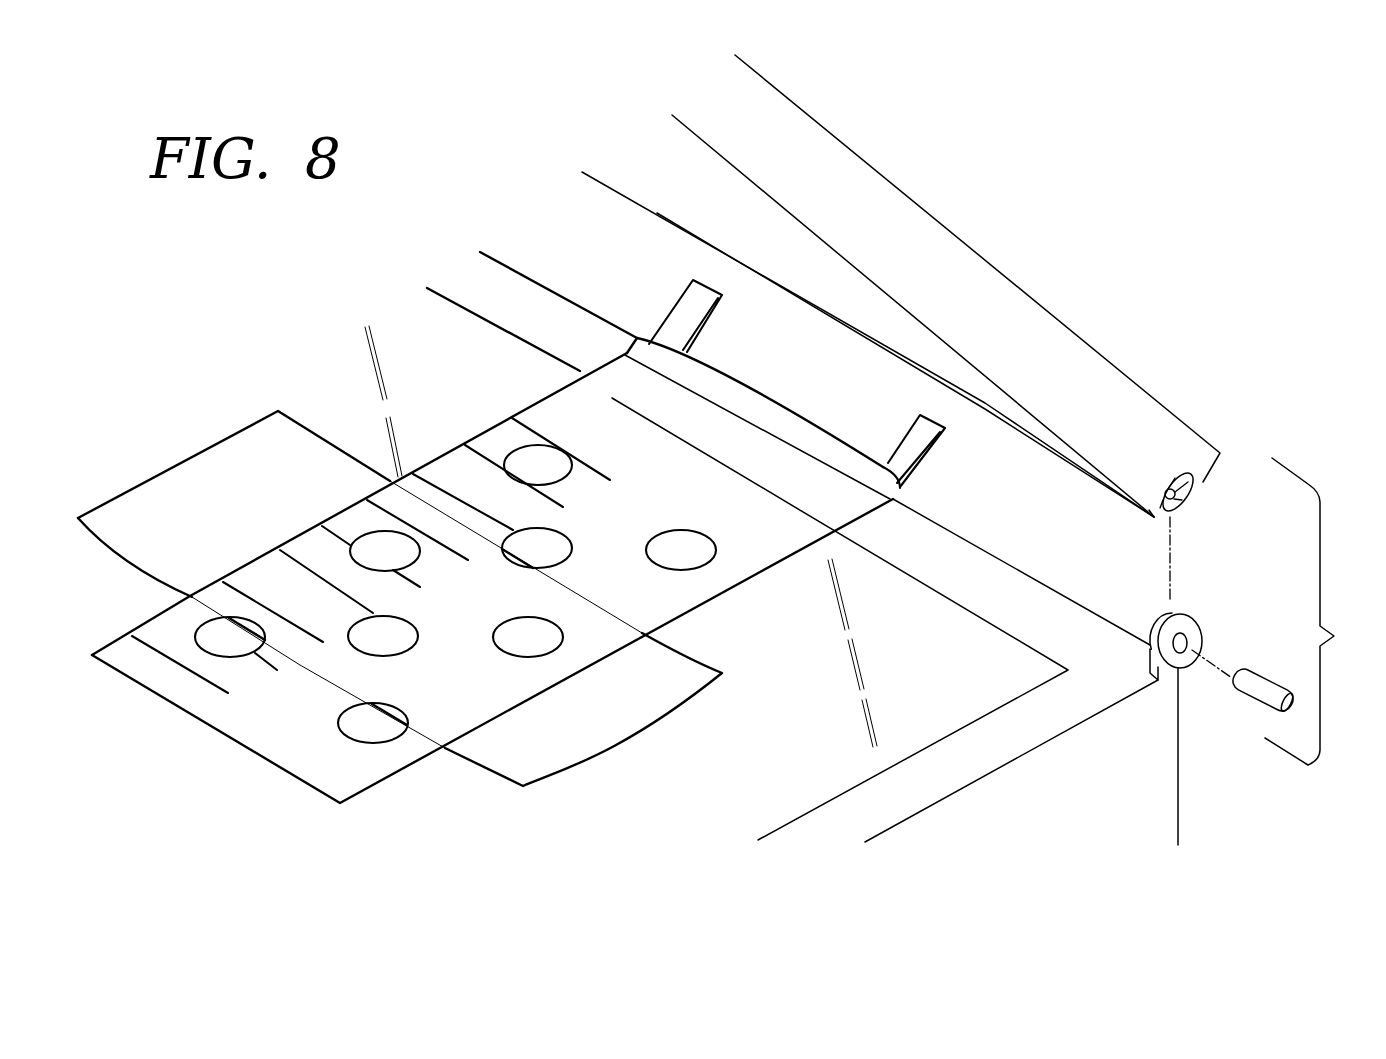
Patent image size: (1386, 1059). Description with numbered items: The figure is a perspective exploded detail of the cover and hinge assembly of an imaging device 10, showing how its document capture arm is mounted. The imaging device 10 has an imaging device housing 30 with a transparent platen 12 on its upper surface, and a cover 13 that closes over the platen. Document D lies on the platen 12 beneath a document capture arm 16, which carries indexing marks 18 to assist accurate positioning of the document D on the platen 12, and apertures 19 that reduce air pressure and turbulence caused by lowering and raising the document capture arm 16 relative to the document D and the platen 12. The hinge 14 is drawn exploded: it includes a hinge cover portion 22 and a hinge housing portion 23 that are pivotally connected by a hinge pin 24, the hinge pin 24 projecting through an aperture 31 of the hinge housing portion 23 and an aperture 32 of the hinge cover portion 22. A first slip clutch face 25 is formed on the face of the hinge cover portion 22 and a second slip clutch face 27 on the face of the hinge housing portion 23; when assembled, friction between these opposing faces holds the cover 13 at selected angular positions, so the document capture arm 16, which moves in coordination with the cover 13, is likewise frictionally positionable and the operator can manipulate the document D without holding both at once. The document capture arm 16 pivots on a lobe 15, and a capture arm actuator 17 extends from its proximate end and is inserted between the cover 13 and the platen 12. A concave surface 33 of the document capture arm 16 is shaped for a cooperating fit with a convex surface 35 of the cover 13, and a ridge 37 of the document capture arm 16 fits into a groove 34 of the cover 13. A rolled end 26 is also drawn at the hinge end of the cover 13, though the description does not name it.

The imaging device 10 is at (1136, 166).
The transparent platen 12 is at (500, 368).
The cover 13 is at (975, 262).
The hinge 14 is at (1118, 650).
The lobe 15 is at (895, 500).
The document capture arm 16 is at (345, 526).
The capture arm actuator 17 is at (693, 287).
The indexing marks 18 is at (280, 562).
The apertures 19 is at (648, 548).
The hinge cover portion 22 is at (1152, 520).
The hinge housing portion 23 is at (1193, 630).
The hinge pin 24 is at (1262, 684).
The first slip clutch face 25 is at (1181, 490).
The curled end 26 is at (1215, 465).
The second slip clutch face 27 is at (1150, 633).
The imaging device housing 30 is at (1165, 795).
The aperture of hinge housing portion 31 is at (1181, 653).
The aperture of hinge cover portion 32 is at (1183, 508).
The concave surface 33 is at (898, 478).
The groove 34 is at (825, 313).
The convex surface 35 is at (905, 376).
The ridge 37 is at (640, 340).
The document D is at (182, 470).